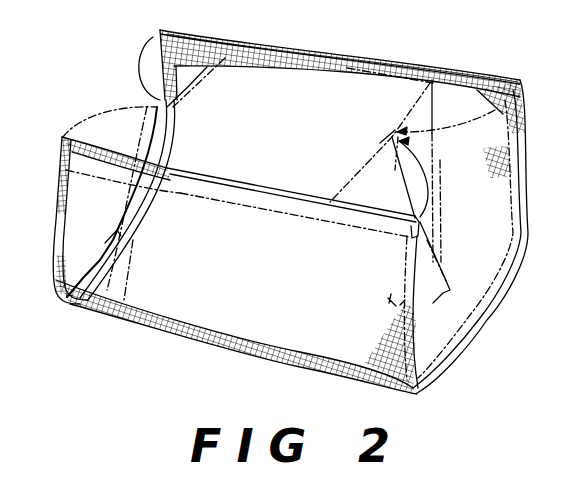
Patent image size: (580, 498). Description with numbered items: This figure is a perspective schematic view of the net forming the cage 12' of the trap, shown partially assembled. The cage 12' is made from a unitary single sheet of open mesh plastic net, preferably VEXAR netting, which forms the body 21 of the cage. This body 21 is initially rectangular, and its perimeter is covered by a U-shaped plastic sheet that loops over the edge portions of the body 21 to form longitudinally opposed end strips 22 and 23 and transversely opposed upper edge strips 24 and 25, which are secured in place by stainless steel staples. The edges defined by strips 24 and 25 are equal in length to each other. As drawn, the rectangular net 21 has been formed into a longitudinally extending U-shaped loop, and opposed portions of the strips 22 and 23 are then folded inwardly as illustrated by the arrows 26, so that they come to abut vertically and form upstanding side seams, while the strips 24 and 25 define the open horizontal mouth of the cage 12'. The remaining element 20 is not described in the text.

The cage 12' is at (251, 238).
The frame member 20 is at (357, 70).
The body 21 is at (303, 67).
The end strip 22 is at (156, 98).
The end strip 23 is at (524, 154).
The upper edge strip 24 is at (247, 182).
The upper edge strip 25 is at (247, 44).
The arrows 26 is at (447, 130).